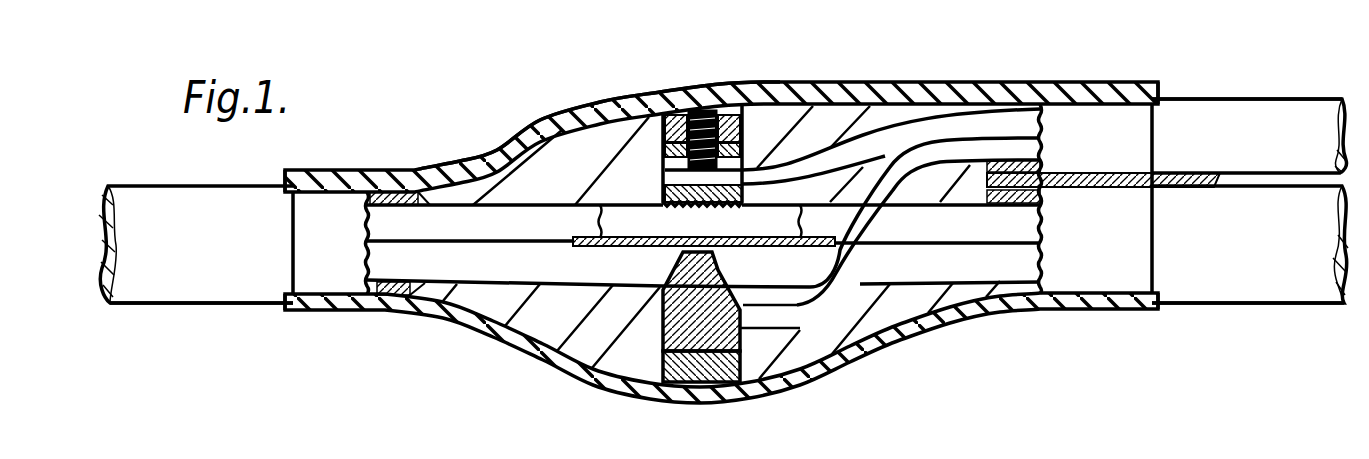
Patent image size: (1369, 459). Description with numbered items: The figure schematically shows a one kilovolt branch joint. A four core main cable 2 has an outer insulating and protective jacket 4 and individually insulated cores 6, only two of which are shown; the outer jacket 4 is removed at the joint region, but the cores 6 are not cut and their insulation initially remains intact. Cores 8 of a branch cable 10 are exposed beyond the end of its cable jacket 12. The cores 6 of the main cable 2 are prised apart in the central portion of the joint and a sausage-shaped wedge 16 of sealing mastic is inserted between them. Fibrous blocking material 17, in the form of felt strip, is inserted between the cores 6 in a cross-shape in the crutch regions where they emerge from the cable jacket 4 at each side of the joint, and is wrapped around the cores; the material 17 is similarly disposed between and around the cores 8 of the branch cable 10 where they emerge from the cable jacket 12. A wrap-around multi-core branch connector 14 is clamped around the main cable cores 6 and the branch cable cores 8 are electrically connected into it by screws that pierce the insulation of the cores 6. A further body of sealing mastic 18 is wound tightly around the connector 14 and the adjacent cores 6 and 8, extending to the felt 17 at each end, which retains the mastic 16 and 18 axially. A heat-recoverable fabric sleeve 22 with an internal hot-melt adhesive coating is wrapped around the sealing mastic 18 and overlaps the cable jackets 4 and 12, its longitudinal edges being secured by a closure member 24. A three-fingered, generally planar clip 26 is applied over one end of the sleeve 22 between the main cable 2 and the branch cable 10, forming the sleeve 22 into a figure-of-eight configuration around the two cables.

The four core main cable 2 is at (192, 256).
The outer insulating and protective jacket 4 is at (203, 304).
The individually insulated cores 6 is at (426, 210).
The cores 8 is at (985, 147).
The branch cable 10 is at (1279, 156).
The cable jacket 12 is at (1205, 98).
The wrap-around multi-core branch connector 14 is at (670, 405).
The wedge of sealing mastic 16 is at (771, 249).
The fibrous blocking material 17 is at (346, 268).
The body of sealing mastic 18 is at (800, 127).
The heat-recoverable fabric sleeve 22 is at (573, 380).
The closure member 24 is at (591, 108).
The three-fingered generally planar clip 26 is at (1203, 189).